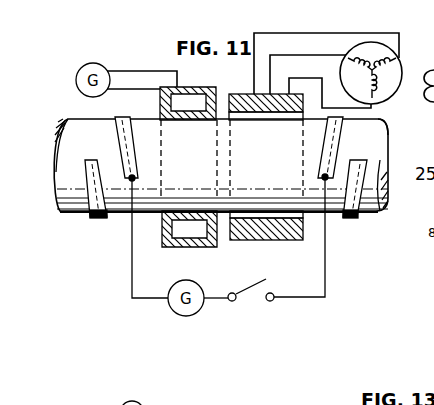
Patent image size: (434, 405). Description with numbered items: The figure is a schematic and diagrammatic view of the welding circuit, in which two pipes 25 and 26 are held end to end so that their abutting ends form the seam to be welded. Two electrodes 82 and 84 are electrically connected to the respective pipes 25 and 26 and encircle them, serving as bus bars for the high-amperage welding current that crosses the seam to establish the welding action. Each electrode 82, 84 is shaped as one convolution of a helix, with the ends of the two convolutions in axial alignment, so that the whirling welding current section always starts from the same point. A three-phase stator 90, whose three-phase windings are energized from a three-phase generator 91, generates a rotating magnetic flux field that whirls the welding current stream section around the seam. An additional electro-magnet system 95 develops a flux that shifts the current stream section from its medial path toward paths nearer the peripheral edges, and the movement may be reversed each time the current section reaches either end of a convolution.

The pipe 25 is at (62, 163).
The pipe 26 is at (380, 151).
The electrode 82 is at (128, 151).
The electrode 84 is at (331, 148).
The three-phase stator 90 is at (267, 105).
The three-phase generator 91 is at (390, 76).
The electro-magnet system 95 is at (190, 103).